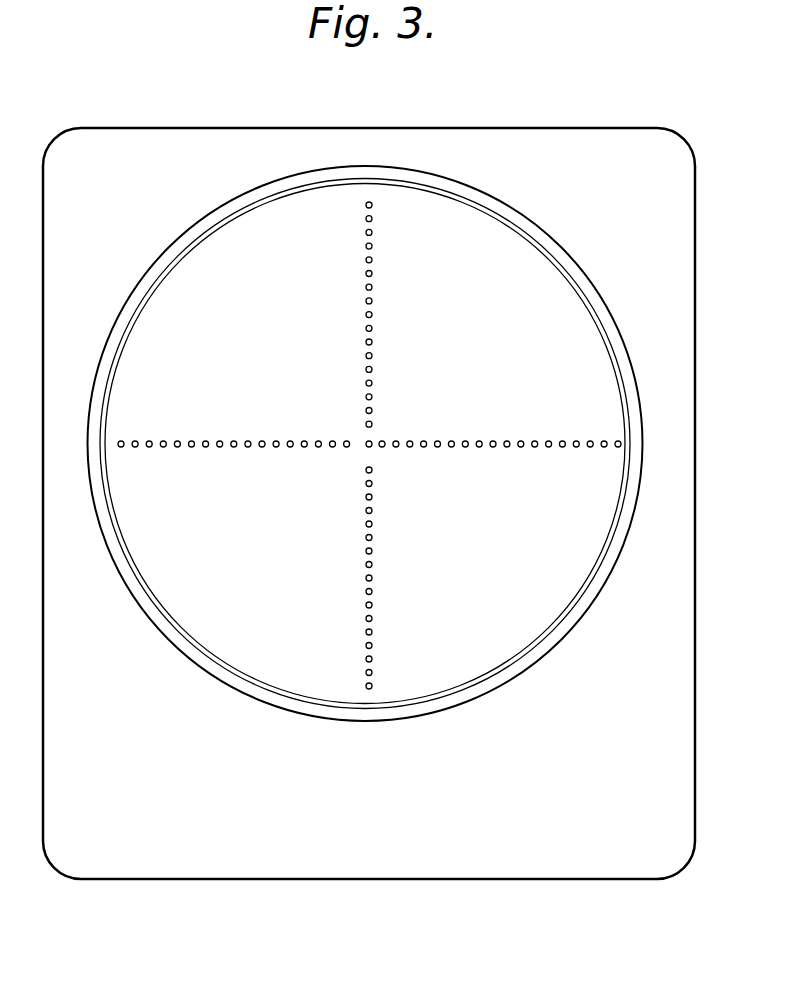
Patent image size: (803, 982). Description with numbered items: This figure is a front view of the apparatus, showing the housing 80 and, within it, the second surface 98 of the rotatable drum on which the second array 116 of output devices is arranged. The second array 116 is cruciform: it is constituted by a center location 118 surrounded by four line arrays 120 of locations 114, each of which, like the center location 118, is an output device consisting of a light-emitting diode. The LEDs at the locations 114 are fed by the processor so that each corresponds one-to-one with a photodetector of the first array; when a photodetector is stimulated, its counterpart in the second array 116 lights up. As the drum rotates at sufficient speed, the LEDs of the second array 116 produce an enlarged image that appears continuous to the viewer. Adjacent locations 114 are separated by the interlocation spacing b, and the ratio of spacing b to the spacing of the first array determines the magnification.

The housing 80 is at (695, 310).
The second surface 98 is at (501, 634).
The second array 116 is at (458, 335).
The locations 114 is at (223, 441).
The center location 118 is at (373, 442).
The line arrays 120 is at (234, 453).
The interlocation spacing b is at (560, 471).